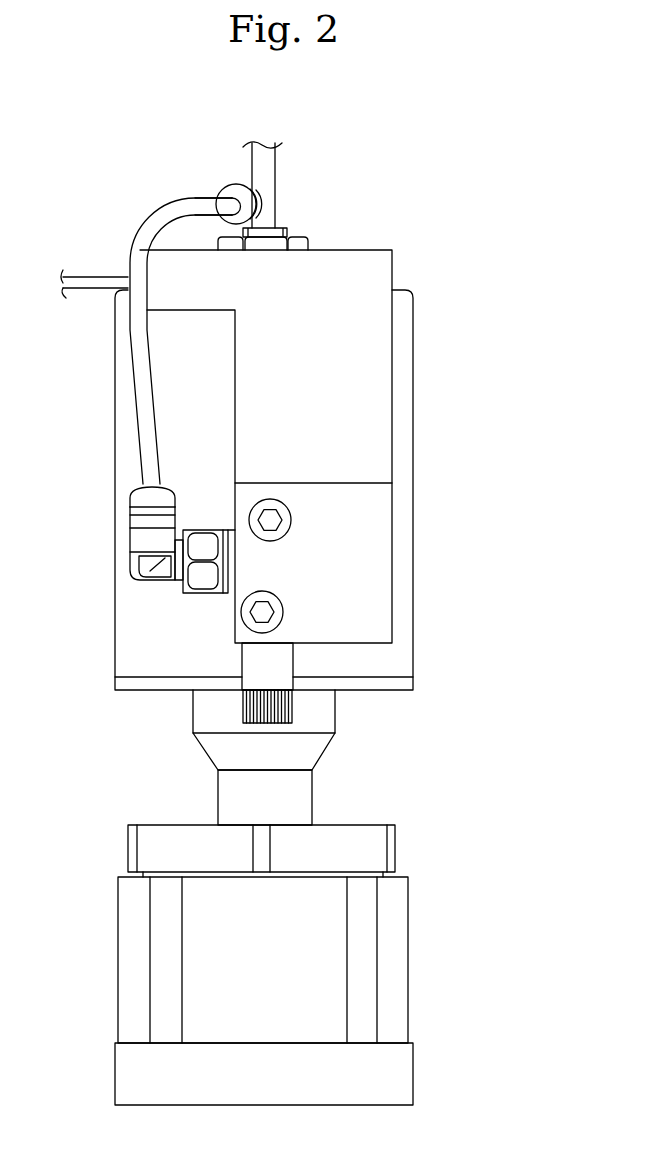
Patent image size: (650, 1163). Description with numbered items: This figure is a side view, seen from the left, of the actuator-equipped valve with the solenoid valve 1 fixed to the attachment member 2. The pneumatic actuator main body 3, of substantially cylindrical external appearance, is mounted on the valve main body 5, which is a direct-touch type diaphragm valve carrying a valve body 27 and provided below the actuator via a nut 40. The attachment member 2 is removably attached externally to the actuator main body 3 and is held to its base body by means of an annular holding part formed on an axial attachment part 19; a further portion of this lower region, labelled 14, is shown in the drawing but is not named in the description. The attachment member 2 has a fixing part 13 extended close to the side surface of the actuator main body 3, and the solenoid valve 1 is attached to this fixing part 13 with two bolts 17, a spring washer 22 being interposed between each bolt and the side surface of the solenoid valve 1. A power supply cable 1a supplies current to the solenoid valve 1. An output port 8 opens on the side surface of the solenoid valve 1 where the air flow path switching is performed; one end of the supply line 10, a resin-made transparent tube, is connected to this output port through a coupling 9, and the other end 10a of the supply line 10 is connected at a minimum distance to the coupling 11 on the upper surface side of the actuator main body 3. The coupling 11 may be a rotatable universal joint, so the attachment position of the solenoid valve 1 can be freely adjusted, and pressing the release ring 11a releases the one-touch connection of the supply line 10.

The solenoid valve 1 is at (397, 268).
The power supply cable 1a is at (90, 276).
The attachment member 2 is at (117, 694).
The actuator main body 3 is at (468, 283).
The valve main body 5 is at (458, 888).
The output port 8 is at (240, 560).
The coupling 9 is at (183, 587).
The supply line 10 is at (130, 343).
The another end of supply line 10a is at (186, 197).
The coupling 11 is at (268, 207).
The release ring 11a is at (236, 182).
The fixing part 13 is at (277, 665).
The bottom plate 14 is at (402, 680).
The bolt 17 is at (290, 517).
The axial attachment part 19 is at (285, 805).
The spring washer 22 is at (300, 695).
The valve body 27 is at (207, 990).
The nut 40 is at (178, 848).